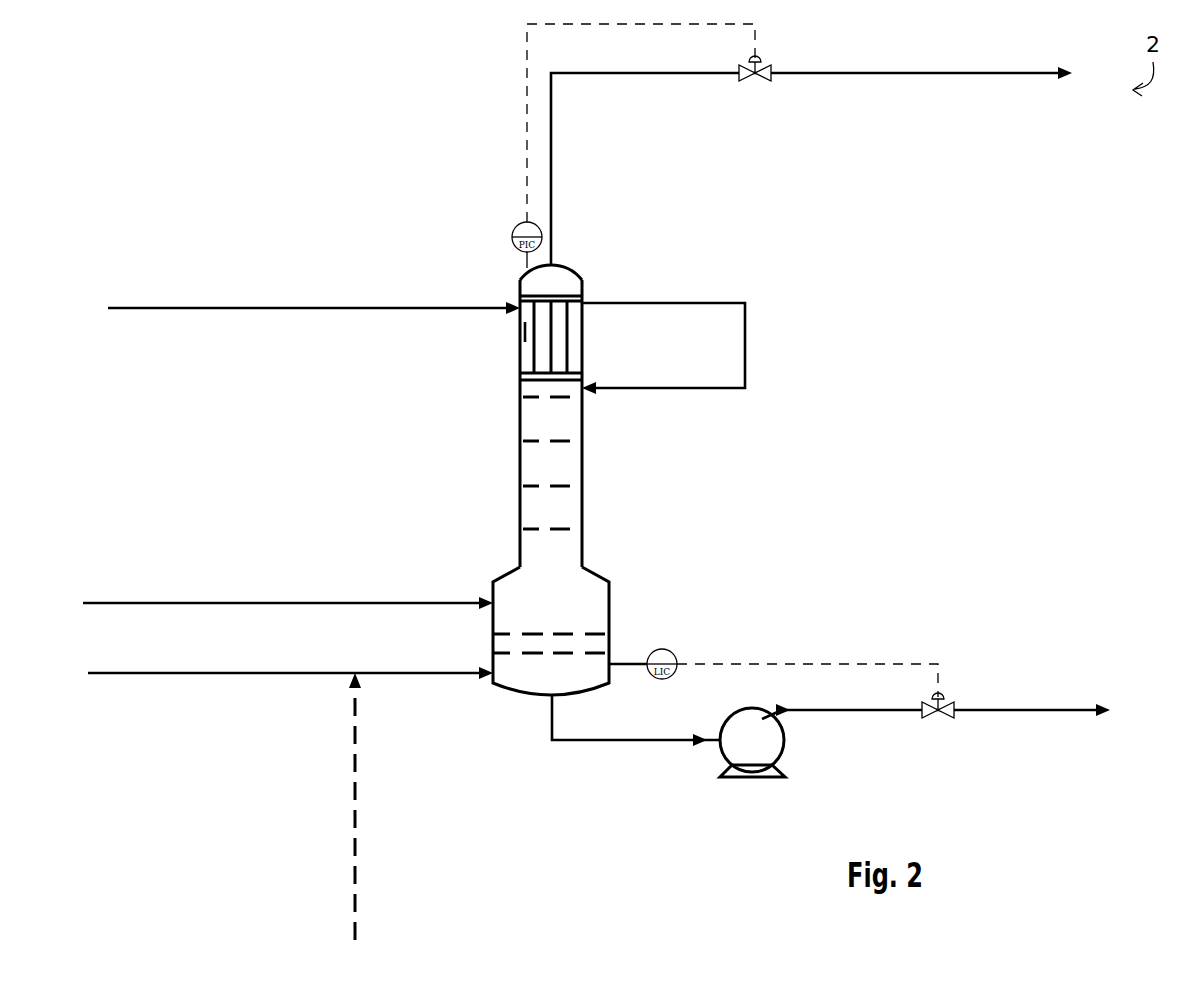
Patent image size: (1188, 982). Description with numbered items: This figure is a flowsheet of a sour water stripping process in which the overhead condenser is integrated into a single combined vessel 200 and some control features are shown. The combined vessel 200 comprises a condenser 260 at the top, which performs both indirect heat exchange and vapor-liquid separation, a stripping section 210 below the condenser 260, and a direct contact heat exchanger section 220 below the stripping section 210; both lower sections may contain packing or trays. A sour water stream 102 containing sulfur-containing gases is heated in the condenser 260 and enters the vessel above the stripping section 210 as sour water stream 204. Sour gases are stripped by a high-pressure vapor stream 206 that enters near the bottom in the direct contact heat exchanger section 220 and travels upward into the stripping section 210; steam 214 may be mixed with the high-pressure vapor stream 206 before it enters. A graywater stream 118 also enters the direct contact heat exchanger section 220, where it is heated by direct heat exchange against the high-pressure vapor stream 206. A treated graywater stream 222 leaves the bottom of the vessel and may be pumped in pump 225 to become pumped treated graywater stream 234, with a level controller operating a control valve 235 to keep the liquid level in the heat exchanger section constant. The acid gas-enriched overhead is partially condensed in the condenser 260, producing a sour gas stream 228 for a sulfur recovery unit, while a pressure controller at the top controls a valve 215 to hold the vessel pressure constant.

The sour water stream 102 is at (255, 311).
The graywater stream 118 is at (214, 602).
The combined vessel 200 is at (520, 279).
The sour water stream 204 is at (640, 305).
The high-pressure vapor stream 206 is at (133, 676).
The stripping section 210 is at (535, 474).
The steam 214 is at (331, 806).
The valve 215 is at (759, 80).
The direct contact heat exchanger section 220 is at (535, 626).
The treated graywater stream 222 is at (610, 743).
The pump 225 is at (745, 780).
The sour gas stream 228 is at (615, 75).
The pumped treated graywater stream 234 is at (848, 713).
The control valve 235 is at (945, 717).
The condenser 260 is at (520, 353).